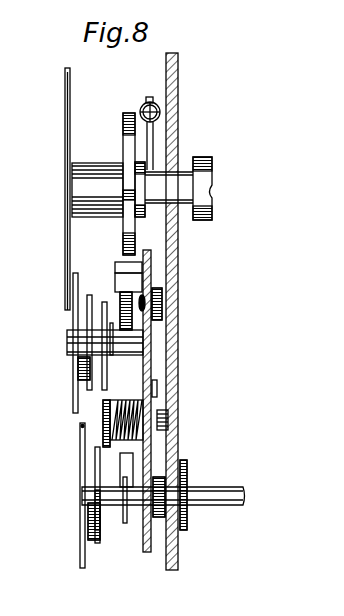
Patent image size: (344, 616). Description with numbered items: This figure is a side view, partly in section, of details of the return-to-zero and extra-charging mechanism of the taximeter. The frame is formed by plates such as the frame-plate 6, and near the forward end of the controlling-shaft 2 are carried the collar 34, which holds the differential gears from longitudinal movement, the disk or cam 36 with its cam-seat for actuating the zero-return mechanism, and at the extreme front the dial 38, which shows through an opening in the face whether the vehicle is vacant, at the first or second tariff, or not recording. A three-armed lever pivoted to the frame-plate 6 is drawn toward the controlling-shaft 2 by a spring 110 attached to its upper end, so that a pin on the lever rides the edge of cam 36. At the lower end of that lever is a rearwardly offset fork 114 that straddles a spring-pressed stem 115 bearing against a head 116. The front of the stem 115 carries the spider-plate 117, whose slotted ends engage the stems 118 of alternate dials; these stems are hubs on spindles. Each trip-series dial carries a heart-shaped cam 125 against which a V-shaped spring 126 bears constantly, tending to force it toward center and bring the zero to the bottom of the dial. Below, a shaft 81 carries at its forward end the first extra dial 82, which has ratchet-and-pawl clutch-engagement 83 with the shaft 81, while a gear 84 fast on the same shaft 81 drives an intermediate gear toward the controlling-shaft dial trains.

The frame-plate 6 is at (179, 251).
The fork 114 is at (179, 451).
The dial 38 is at (70, 98).
The spring 110 is at (144, 104).
The disk 36 is at (123, 128).
The controlling-shaft 2 is at (184, 181).
The collar 34 is at (213, 214).
The spring 126 is at (162, 322).
The heart-shaped cam 125 is at (126, 363).
The spring-pressed stem 115 is at (143, 403).
The spider-plate 117 is at (108, 450).
The head 116 is at (169, 419).
The stems 118 is at (118, 508).
The shaft 81 is at (233, 488).
The extra dial 82 is at (84, 506).
The ratchet-and-pawl clutch-engagement 83 is at (143, 518).
The gear 84 is at (188, 520).